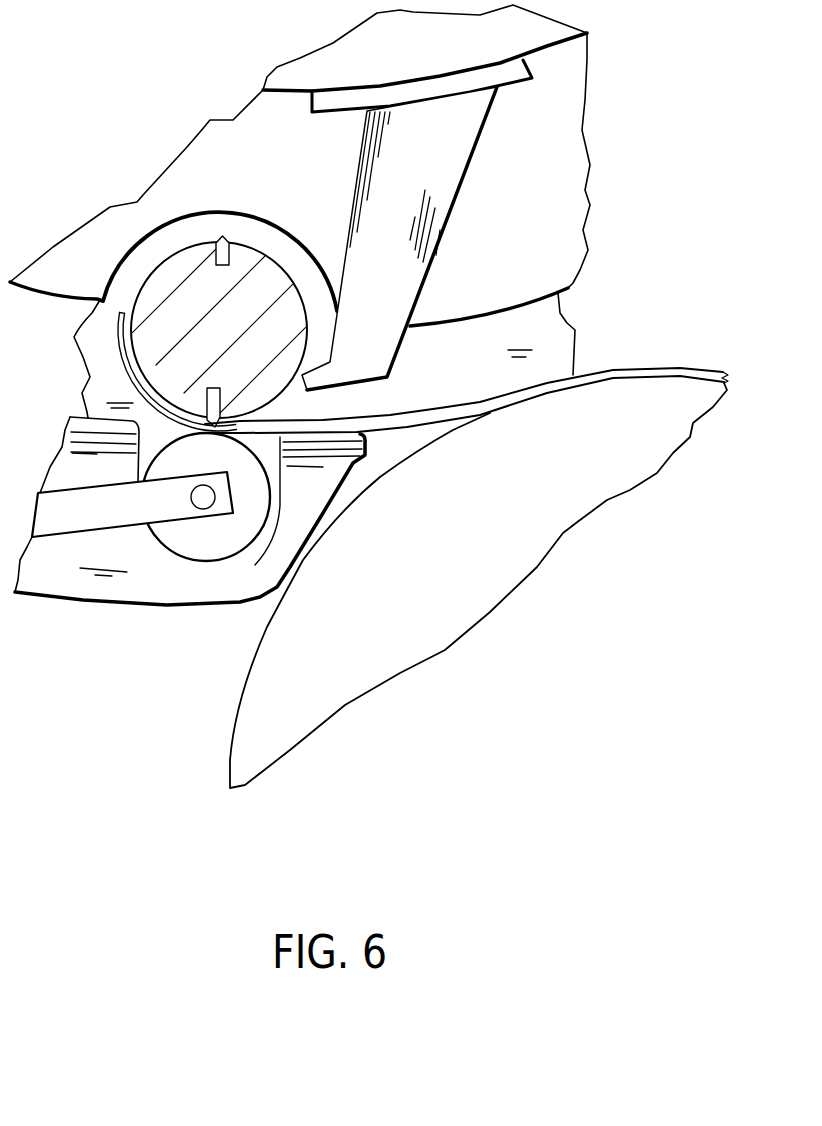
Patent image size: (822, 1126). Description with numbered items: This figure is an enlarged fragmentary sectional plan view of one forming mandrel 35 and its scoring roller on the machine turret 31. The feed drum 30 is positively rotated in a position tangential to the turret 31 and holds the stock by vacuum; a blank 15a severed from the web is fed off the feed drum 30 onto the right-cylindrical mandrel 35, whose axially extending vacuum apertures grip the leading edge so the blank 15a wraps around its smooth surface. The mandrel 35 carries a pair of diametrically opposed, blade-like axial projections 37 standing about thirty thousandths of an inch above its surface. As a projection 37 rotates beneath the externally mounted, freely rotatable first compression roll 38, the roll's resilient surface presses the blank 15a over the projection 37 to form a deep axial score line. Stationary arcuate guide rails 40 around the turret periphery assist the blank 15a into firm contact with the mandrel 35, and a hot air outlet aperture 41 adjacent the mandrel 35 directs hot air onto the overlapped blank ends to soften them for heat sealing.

The blank 15a is at (418, 413).
The feed drum 30 is at (453, 562).
The machine turret 31 is at (604, 204).
The mandrel 35 is at (172, 273).
The axial projection 37 is at (223, 237).
The first compression roll 38 is at (193, 537).
The guide rail 40 is at (80, 592).
The hot air outlet aperture 41 is at (302, 390).